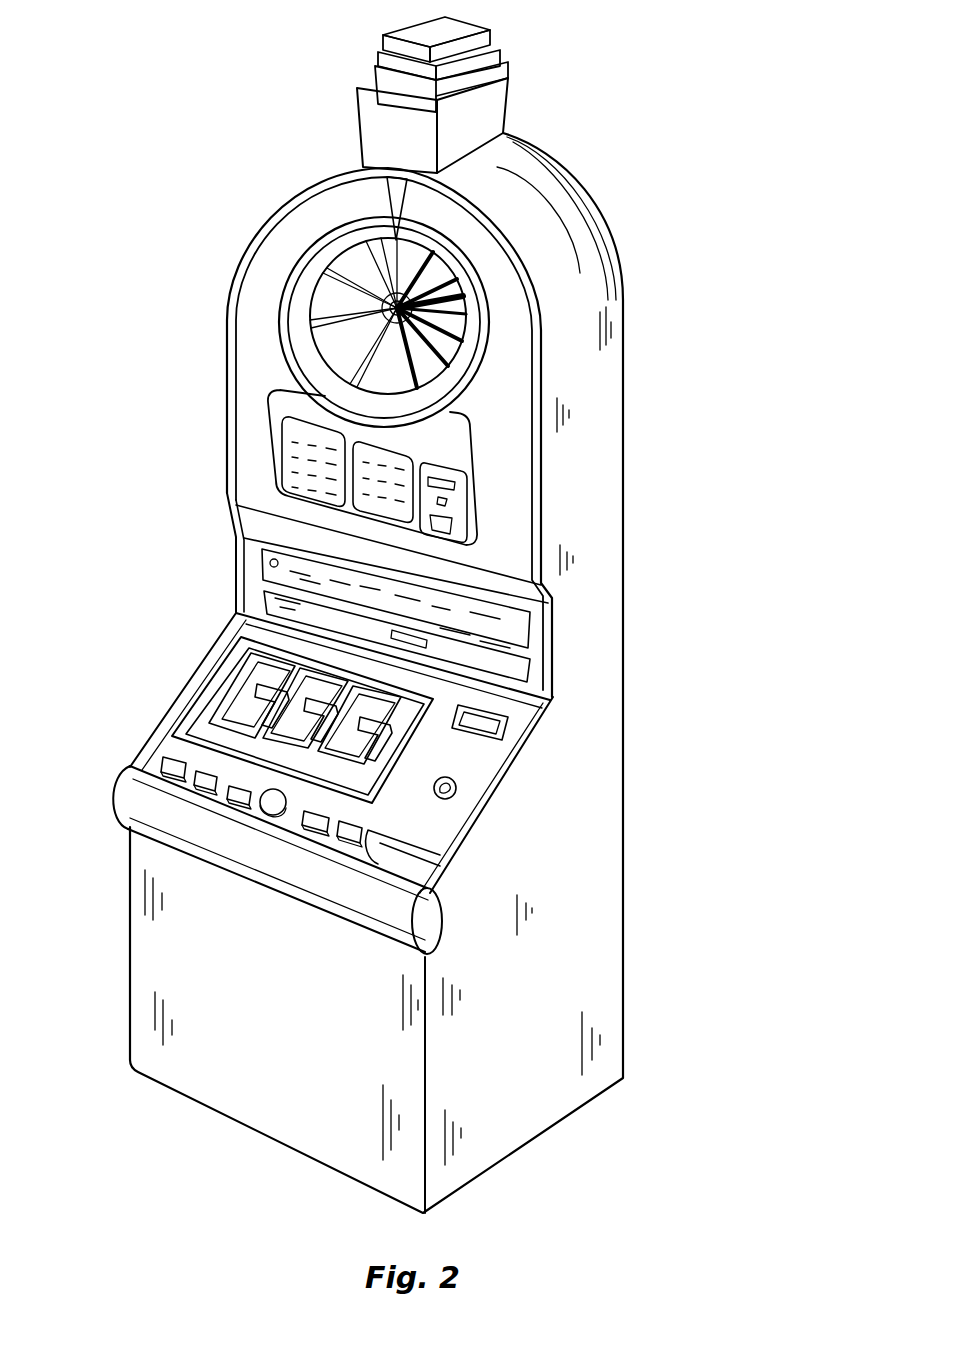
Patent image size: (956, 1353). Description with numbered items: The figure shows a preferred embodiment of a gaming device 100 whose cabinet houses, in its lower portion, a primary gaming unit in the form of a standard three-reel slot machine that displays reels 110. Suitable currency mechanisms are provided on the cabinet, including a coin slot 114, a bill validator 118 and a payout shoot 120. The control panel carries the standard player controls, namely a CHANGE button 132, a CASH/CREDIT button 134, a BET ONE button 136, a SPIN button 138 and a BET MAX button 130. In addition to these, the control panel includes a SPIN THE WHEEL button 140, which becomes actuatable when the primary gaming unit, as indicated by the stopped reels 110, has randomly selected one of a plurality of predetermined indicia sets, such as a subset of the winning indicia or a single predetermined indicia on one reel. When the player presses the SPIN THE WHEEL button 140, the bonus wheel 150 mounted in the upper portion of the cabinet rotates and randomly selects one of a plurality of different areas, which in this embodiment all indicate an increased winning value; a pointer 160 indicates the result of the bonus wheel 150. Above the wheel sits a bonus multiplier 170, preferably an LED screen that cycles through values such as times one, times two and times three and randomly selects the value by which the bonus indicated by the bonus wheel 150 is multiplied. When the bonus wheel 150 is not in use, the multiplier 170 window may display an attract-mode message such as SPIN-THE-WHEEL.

The gaming device 100 is at (368, 673).
The reels 110 is at (247, 700).
The coin slot 114 is at (457, 792).
The bill validator 118 is at (505, 713).
The payout shoot 120 is at (413, 870).
The BET MAX button 130 is at (340, 840).
The CHANGE button 132 is at (148, 752).
The CASH/CREDIT button 134 is at (198, 797).
The BET ONE button 136 is at (233, 806).
The SPIN button 138 is at (310, 834).
The SPIN THE WHEEL button 140 is at (262, 812).
The bonus wheel 150 is at (298, 290).
The pointer 160 is at (387, 188).
The bonus multiplier 170 is at (373, 82).